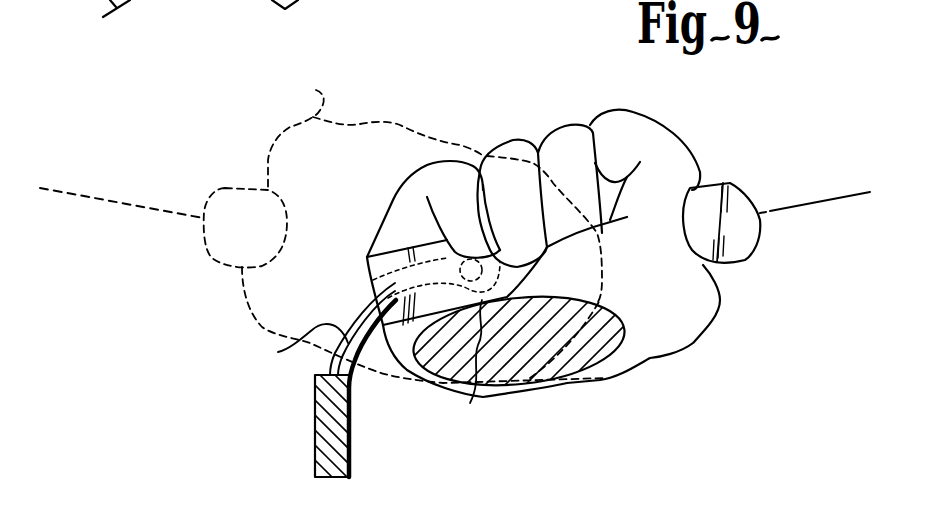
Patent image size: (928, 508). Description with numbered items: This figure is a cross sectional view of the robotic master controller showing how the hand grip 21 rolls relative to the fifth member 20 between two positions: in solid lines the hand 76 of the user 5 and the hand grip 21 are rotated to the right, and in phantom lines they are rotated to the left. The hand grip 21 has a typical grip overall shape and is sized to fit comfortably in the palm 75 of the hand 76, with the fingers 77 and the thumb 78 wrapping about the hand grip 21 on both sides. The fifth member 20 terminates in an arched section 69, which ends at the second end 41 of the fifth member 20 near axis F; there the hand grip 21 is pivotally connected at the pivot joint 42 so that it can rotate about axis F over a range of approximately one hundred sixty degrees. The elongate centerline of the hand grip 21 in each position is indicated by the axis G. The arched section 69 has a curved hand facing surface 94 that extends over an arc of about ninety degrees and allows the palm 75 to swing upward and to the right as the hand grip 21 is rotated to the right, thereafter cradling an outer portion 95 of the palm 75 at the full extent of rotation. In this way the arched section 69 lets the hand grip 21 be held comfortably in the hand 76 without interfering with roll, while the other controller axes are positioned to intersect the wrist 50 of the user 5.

The user 5 is at (707, 315).
The fifth member 20 is at (315, 432).
The hand grip 21 is at (228, 187).
The second end 41 is at (447, 258).
The pivot joint 42 is at (440, 246).
The wrist 50 is at (613, 328).
The arched section 69 is at (299, 344).
The palm 75 is at (470, 397).
The hand 76 is at (679, 380).
The fingers 77 is at (573, 125).
The thumb 78 is at (645, 120).
The hand facing surface 94 is at (361, 350).
The outer portion 95 is at (358, 343).
The axis G is at (136, 203).